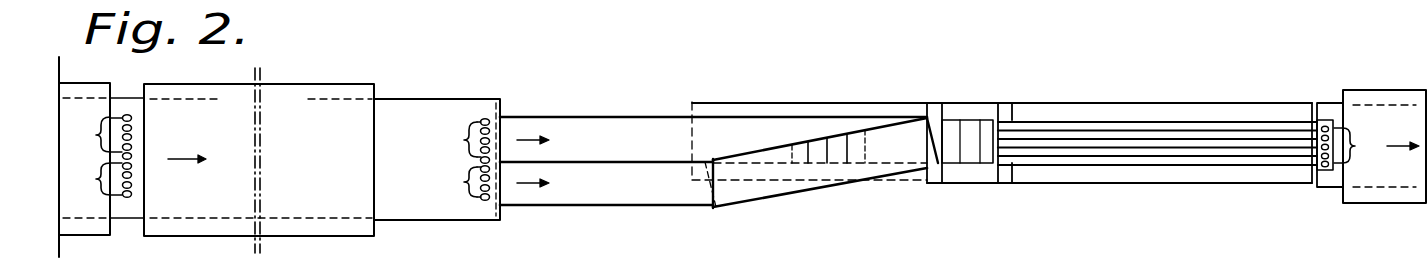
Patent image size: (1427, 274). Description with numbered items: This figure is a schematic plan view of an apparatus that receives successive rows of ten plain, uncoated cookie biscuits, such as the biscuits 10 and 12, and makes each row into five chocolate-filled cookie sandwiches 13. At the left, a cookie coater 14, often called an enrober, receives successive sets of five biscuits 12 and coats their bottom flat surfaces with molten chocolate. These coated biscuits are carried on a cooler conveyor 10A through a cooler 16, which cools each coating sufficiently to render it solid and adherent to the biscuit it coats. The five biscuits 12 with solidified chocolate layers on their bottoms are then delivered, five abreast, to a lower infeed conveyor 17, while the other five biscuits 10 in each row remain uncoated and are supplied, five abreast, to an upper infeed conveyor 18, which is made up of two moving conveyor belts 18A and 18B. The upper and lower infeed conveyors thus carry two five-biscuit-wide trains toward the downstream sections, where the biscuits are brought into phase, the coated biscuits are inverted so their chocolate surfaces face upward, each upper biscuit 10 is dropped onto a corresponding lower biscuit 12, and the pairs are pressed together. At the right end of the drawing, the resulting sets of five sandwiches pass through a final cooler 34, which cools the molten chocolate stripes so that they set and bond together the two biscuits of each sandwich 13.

The cookie biscuit 10 is at (93, 179).
The cooler conveyor 10A is at (418, 108).
The cookie biscuit 12 is at (93, 134).
The chocolate-filled cookie sandwich 13 is at (1368, 145).
The cookie coater 14 is at (83, 86).
The cooler 16 is at (333, 90).
The lower infeed conveyor 17 is at (580, 125).
The upper infeed conveyor 18 is at (719, 182).
The conveyor belt 18A is at (556, 198).
The conveyor belt 18B is at (781, 186).
The final cooler 34 is at (1403, 70).